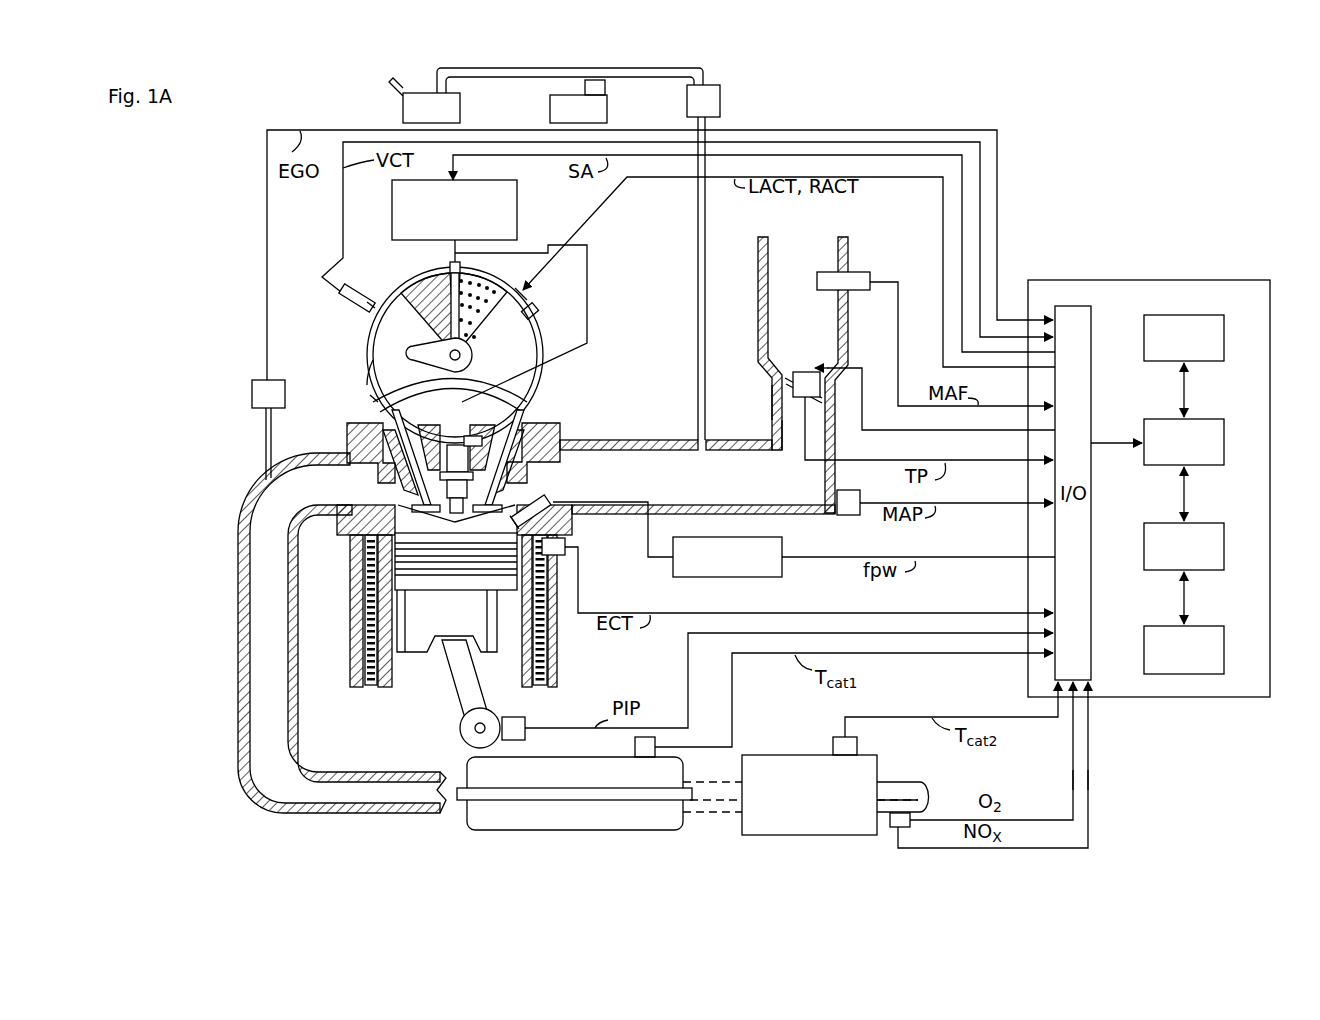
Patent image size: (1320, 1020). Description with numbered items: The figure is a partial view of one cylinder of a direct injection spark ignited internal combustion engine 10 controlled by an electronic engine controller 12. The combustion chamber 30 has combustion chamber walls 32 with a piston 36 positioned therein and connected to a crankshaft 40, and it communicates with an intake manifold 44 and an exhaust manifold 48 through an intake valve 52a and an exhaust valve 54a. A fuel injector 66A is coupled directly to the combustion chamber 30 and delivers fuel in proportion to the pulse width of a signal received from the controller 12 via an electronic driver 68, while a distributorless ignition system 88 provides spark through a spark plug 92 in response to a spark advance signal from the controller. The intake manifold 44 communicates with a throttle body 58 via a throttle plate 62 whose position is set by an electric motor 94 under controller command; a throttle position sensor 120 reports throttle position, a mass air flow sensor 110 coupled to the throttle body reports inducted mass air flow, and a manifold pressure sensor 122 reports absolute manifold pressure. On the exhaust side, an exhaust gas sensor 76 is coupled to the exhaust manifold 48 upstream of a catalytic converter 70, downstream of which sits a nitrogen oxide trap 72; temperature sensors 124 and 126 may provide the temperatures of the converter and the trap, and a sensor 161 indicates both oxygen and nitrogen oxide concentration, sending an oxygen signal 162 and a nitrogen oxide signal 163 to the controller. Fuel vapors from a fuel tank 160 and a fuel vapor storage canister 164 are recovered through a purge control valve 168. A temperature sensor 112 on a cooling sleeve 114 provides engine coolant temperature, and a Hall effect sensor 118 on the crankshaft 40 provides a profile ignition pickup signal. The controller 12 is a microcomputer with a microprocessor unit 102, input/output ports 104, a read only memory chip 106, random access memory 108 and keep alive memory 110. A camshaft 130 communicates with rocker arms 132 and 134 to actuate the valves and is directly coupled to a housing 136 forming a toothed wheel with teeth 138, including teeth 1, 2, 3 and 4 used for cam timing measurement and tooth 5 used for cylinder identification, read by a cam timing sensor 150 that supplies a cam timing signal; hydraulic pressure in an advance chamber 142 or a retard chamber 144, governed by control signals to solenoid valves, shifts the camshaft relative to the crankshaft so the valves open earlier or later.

The tooth 1 is at (449, 262).
The tooth 2 is at (536, 314).
The tooth 3 is at (474, 436).
The tooth 4 is at (374, 398).
The tooth 5 is at (370, 311).
The direct injection spark ignited internal combustion engine 10 is at (604, 358).
The electronic engine controller 12 is at (1226, 283).
The combustion chamber 30 is at (365, 597).
The combustion chamber walls 32 is at (388, 690).
The piston 36 is at (437, 646).
The crankshaft 40 is at (463, 728).
The intake manifold 44 is at (752, 498).
The exhaust manifold 48 is at (250, 507).
The intake valve 52a is at (510, 506).
The exhaust valve 54a is at (400, 505).
The throttle body 58 is at (790, 437).
The throttle plate 62 is at (797, 380).
The fuel injector 66A is at (556, 503).
The electronic driver 68 is at (745, 578).
The catalytic converter 70 is at (525, 766).
The NOx trap 72 is at (765, 757).
The exhaust gas sensor 76 is at (270, 378).
The distributorless ignition system 88 is at (518, 208).
The spark plug 92 is at (450, 444).
The electric motor 94 is at (814, 366).
The microprocessor unit 102 is at (1194, 419).
The input/output ports 104 is at (1092, 348).
The read only memory chip 106 is at (1194, 315).
The random access memory 108 is at (1194, 523).
The keep alive memory 110 is at (865, 272).
The temperature sensor 112 is at (566, 547).
The cooling sleeve 114 is at (560, 662).
The Hall effect sensor 118 is at (512, 718).
The throttle position sensor 120 is at (780, 400).
The manifold pressure sensor 122 is at (845, 516).
The temperature sensor 124 is at (634, 745).
The temperature sensor 126 is at (857, 748).
The camshaft 130 is at (418, 355).
The rocker arm 132 is at (385, 416).
The rocker arm 134 is at (522, 416).
The housing 136 is at (366, 375).
The teeth 138 is at (542, 291).
The advance chamber 142 is at (480, 285).
The retard chamber 144 is at (413, 283).
The cam timing sensor 150 is at (341, 303).
The fuel tank 160 is at (462, 108).
The sensor 161 is at (897, 832).
The signal 162 is at (1072, 780).
The signal 163 is at (1089, 760).
The fuel vapor storage canister 164 is at (608, 108).
The purge control valve 168 is at (721, 106).